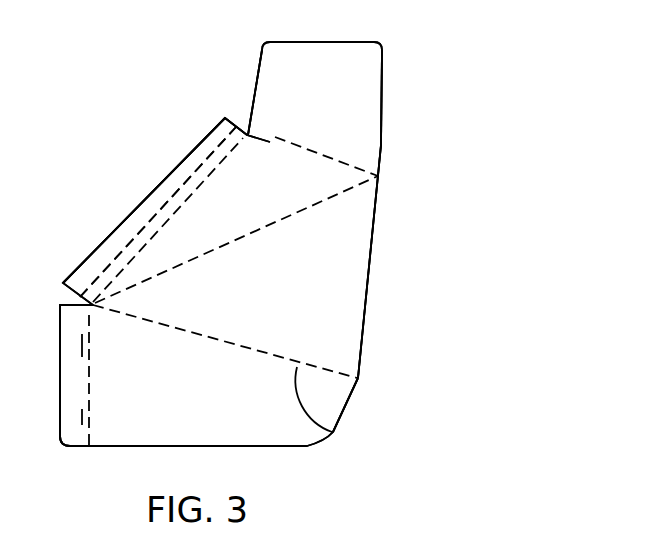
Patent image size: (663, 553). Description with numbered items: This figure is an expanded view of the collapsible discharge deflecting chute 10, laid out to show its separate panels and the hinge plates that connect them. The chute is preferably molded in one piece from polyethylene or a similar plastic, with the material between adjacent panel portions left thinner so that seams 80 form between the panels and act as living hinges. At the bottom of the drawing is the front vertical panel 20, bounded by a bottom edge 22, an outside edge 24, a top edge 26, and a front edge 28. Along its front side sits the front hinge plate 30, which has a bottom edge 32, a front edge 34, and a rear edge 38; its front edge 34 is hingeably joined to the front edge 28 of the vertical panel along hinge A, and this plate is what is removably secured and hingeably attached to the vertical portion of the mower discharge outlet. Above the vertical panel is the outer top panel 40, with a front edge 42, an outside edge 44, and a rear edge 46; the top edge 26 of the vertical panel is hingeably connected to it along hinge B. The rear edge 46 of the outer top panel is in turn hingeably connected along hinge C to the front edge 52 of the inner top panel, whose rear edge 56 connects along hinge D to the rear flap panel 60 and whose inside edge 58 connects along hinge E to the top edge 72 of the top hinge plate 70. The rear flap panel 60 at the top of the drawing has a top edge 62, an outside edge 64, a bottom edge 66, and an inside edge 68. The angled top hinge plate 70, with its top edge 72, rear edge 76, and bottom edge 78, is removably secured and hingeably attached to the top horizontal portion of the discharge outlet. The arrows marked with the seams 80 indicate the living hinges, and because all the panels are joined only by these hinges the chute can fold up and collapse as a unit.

The collapsible discharge deflecting chute 10 is at (432, 180).
The front vertical panel 20 is at (247, 421).
The bottom edge 22 is at (228, 447).
The outside edge 24 is at (348, 401).
The top edge 26 is at (333, 432).
The front edge 28 is at (86, 416).
The front hinge plate 30 is at (70, 387).
The bottom edge 32 is at (68, 446).
The front edge 34 is at (78, 356).
The rear edge 38 is at (61, 413).
The outer top panel 40 is at (291, 285).
The front edge 42 is at (317, 363).
The outside edge 44 is at (377, 263).
The rear edge 46 is at (307, 208).
The front edge 52 is at (349, 184).
The rear edge 56 is at (333, 158).
The inside edge 58 is at (185, 198).
The rear flap panel 60 is at (326, 84).
The top edge 62 is at (328, 151).
The outside edge 64 is at (382, 112).
The bottom edge 66 is at (323, 42).
The inside edge 68 is at (257, 72).
The top hinge plate 70 is at (161, 207).
The top edge 72 is at (140, 237).
The rear edge 76 is at (235, 117).
The bottom edge 78 is at (89, 256).
The seams 80 is at (180, 216).
The hinge A is at (92, 362).
The hinge B is at (257, 349).
The hinge C is at (235, 244).
The hinge D is at (192, 193).
The hinge E is at (292, 147).